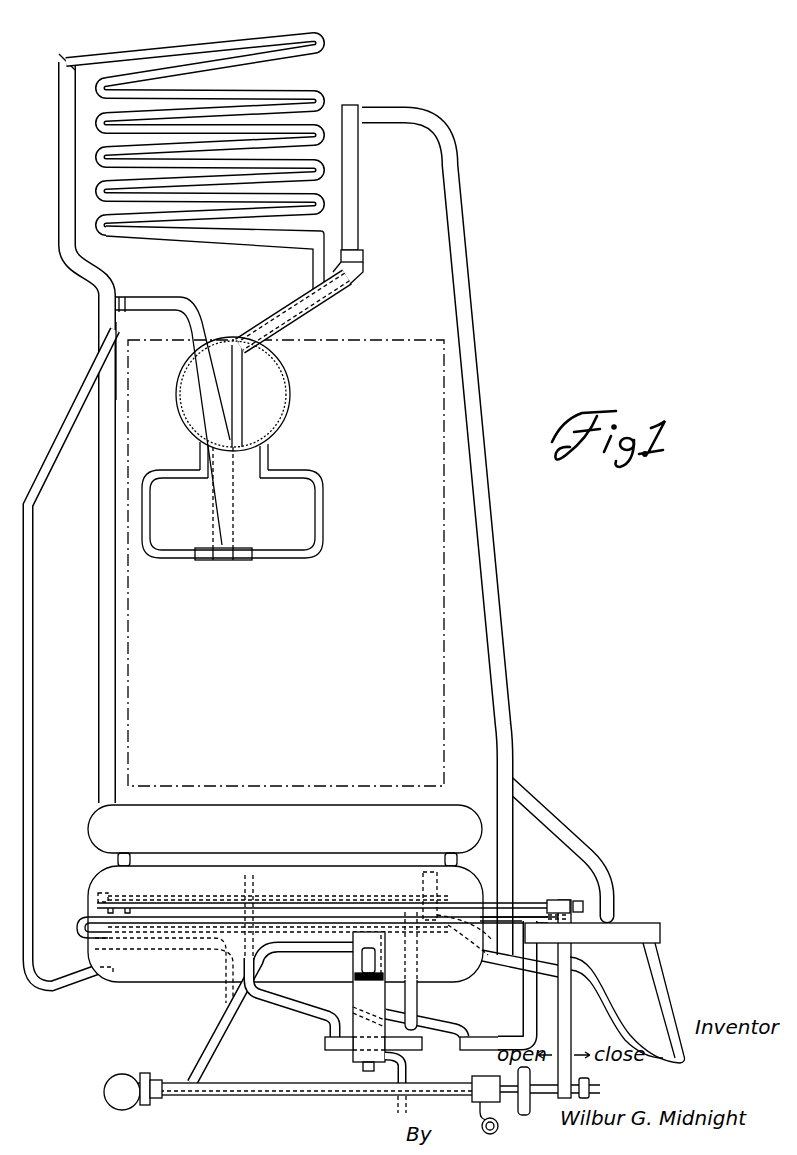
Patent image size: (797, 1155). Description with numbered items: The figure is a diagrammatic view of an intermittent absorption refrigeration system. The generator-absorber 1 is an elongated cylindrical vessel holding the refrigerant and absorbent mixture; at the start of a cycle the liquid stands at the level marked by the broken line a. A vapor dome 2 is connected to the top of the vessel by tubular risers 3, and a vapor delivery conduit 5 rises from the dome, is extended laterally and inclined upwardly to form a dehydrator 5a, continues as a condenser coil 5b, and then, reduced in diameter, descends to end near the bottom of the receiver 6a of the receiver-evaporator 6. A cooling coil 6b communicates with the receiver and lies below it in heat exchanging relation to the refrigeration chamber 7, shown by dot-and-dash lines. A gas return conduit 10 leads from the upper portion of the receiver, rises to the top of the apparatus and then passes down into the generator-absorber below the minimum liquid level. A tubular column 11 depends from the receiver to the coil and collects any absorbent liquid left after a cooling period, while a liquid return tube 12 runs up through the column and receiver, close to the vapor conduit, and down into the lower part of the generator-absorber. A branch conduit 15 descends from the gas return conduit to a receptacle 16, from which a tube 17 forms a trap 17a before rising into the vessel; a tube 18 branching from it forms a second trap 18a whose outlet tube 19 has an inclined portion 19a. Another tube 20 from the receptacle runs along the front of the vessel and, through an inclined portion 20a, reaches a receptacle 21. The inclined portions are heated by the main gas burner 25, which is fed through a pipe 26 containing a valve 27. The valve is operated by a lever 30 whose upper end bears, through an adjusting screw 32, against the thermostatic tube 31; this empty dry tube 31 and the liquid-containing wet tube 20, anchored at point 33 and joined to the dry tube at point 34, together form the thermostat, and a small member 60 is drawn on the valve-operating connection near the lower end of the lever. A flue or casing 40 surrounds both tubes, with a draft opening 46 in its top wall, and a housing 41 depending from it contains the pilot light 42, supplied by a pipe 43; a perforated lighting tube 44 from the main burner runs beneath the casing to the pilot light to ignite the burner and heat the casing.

The generator-absorber 1 is at (98, 884).
The vapor dome 2 is at (285, 829).
The tubular risers 3 is at (125, 853).
The vapor delivery conduit 5 is at (232, 390).
The dehydrator 5a is at (160, 52).
The condenser coil 5b is at (287, 90).
The receiver-evaporator 6 is at (294, 440).
The receiver 6a is at (275, 390).
The cooling coil 6b is at (318, 519).
The refrigeration chamber 7 is at (286, 563).
The gas return conduit 10 is at (330, 290).
The tubular column 11 is at (235, 505).
The liquid return tube 12 is at (33, 660).
The branch conduit 15 is at (585, 845).
The receptacle 16 is at (637, 927).
The tube 17 is at (423, 880).
The trap 17a is at (658, 980).
The tube 18 is at (530, 998).
The trap 18a is at (502, 1028).
The tube 19 is at (254, 878).
The inclined portion of tube 19a is at (292, 1040).
The wet tube 20 is at (303, 905).
The inclined portion of tube 20a is at (247, 1015).
The receptacle 21 is at (345, 1049).
The gas burner 25 is at (245, 1083).
The pipe 26 is at (488, 1108).
The valve 27 is at (505, 1110).
The lever 30 is at (571, 1015).
The thermostatic tube 31 is at (350, 903).
The screw 32 is at (552, 898).
The anchor point 33 is at (468, 935).
The connection point 34 is at (165, 903).
The flue or casing 40 is at (212, 897).
The housing 41 is at (385, 995).
The pilot light 42 is at (360, 967).
The pipe 43 is at (410, 1072).
The perforated lighting tube 44 is at (213, 1032).
The opening 46 is at (127, 897).
The knob 60 is at (590, 1088).
The liquid level line a is at (463, 900).